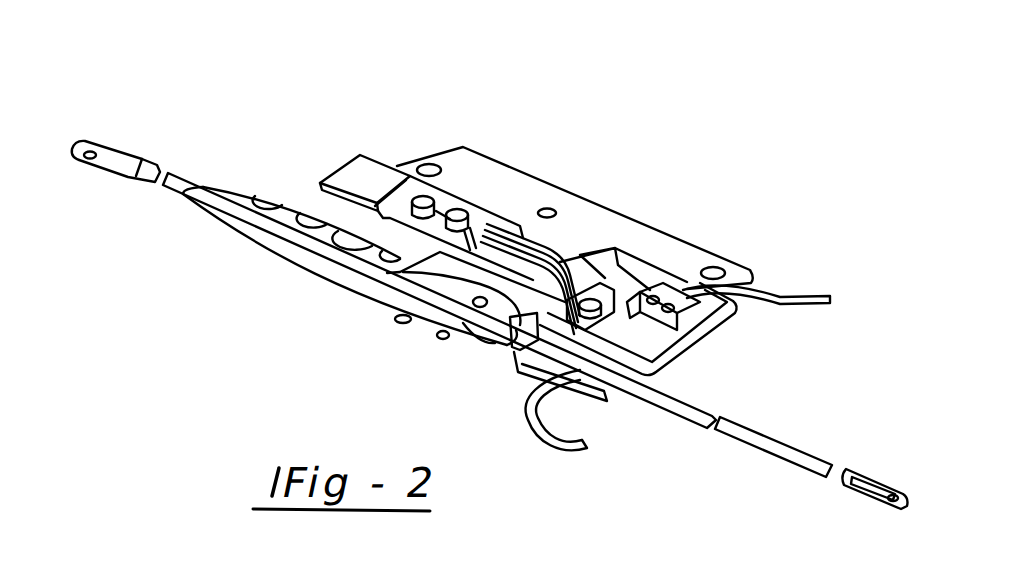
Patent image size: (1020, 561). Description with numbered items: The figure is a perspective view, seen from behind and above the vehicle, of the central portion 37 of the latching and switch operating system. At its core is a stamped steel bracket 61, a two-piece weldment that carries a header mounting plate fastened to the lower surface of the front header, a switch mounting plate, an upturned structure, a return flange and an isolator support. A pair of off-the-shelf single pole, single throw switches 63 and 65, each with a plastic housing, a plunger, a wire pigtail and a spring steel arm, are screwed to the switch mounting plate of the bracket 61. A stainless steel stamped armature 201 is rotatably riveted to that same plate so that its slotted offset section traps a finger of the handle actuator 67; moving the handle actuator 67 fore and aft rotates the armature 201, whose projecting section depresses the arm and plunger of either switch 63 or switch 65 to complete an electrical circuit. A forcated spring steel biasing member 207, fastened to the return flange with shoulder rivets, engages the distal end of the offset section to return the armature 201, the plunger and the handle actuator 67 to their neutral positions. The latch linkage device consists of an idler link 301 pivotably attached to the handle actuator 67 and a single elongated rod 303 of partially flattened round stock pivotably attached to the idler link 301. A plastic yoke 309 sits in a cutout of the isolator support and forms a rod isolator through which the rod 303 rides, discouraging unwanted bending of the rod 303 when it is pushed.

The central portion 37 is at (668, 48).
The stamped steel bracket 61 is at (643, 233).
The switch 63 is at (683, 317).
The switch 65 is at (638, 378).
The handle actuator 67 is at (257, 243).
The stamped armature 201 is at (548, 243).
The biasing member 207 is at (478, 218).
The idler link 301 is at (440, 290).
The elongated rod 303 is at (175, 188).
The plastic yoke 309 is at (455, 387).